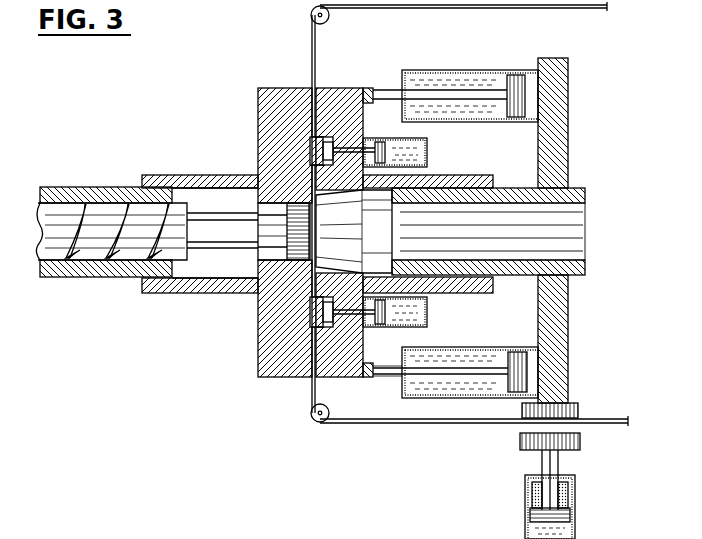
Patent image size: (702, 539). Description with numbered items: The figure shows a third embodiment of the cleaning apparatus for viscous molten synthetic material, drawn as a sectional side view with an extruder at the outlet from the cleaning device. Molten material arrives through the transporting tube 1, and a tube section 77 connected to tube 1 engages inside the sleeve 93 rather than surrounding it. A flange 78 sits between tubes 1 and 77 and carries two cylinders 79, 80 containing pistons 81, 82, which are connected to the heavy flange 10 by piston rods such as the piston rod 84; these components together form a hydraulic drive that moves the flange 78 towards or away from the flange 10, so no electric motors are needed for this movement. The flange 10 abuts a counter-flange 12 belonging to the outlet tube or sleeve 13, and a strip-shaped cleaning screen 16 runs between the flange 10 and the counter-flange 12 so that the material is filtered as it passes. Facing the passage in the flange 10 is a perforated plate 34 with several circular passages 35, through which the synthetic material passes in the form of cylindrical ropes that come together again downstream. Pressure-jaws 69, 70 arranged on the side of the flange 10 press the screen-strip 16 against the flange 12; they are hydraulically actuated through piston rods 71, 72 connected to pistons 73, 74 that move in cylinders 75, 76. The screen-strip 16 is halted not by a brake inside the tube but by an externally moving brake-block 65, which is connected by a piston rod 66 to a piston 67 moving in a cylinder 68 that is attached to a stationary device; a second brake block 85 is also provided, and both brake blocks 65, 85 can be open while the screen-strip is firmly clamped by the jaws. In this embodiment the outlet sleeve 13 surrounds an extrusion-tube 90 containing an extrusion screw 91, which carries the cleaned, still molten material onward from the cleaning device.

The transporting tube 1 is at (586, 178).
The flange 10 is at (338, 88).
The counter-flange 12 is at (282, 88).
The outlet sleeve 13 is at (205, 175).
The cleaning screen-strip 16 is at (357, 423).
The perforated plate 34 is at (277, 238).
The circular passages 35 is at (272, 214).
The brake-block 65 is at (520, 445).
The piston rod 66 is at (528, 486).
The piston 67 is at (528, 516).
The cylinder 68 is at (575, 500).
The pressure-jaw 69 is at (310, 145).
The pressure-jaw 70 is at (308, 320).
The piston rod 71 is at (366, 90).
The piston rod 72 is at (313, 347).
The piston 73 is at (380, 138).
The piston 74 is at (378, 328).
The cylinder 75 is at (427, 150).
The cylinder 76 is at (427, 305).
The tube section 77 is at (508, 280).
The flange 78 is at (568, 97).
The cylinder 79 is at (485, 70).
The cylinder 80 is at (430, 398).
The piston 81 is at (520, 75).
The piston 82 is at (527, 370).
The piston rod 84 is at (390, 378).
The brake block 85 is at (578, 410).
The extrusion-tube 90 is at (120, 187).
The extrusion screw 91 is at (92, 262).
The sleeve 93 is at (475, 175).